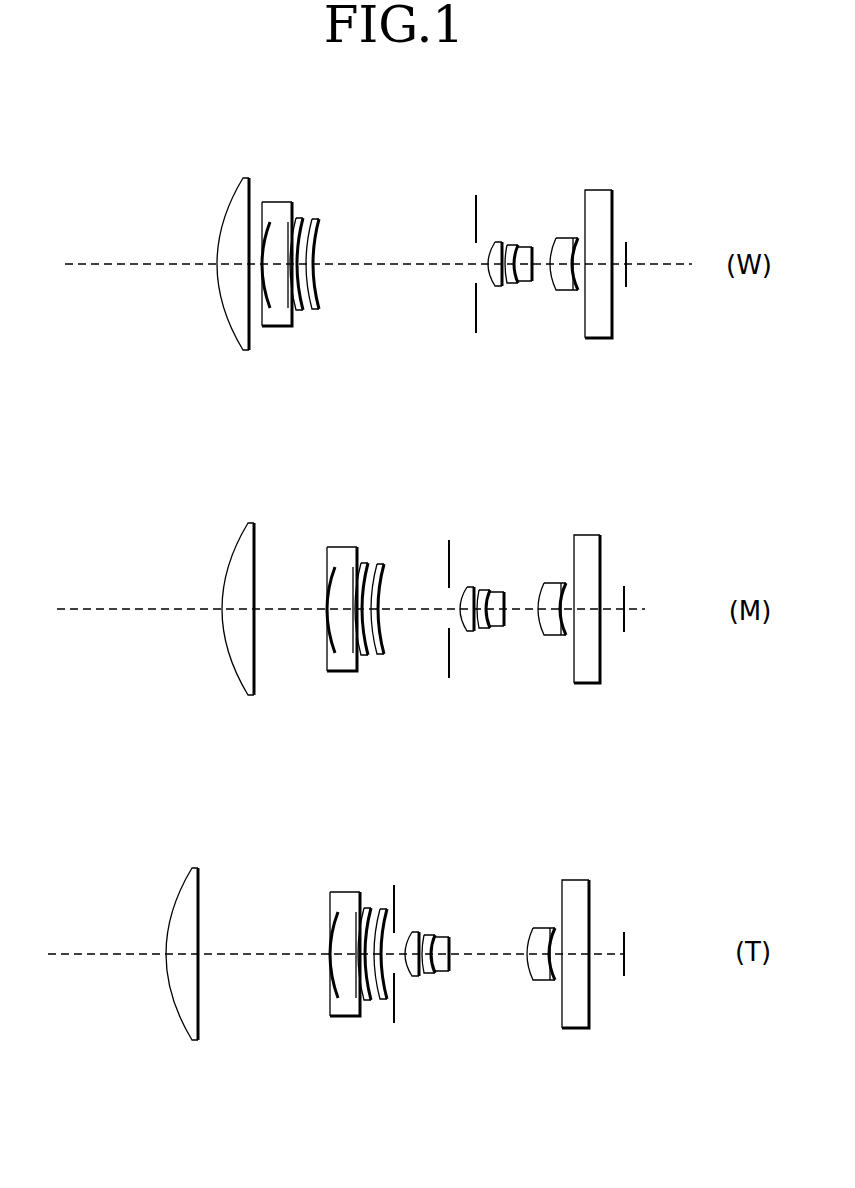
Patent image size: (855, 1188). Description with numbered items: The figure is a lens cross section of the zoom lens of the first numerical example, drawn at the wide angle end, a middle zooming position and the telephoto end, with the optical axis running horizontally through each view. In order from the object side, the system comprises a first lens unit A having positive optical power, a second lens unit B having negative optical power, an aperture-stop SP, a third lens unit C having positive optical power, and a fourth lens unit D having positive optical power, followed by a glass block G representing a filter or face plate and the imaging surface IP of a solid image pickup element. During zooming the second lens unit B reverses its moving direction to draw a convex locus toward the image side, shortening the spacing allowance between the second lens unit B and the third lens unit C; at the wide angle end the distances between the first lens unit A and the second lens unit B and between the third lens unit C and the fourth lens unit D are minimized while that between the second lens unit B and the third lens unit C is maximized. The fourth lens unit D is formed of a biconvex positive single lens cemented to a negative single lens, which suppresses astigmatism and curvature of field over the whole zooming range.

The first lens unit A is at (222, 368).
The second lens unit B is at (264, 368).
The third lens unit C is at (535, 369).
The fourth lens unit D is at (550, 369).
The aperture-stop SP is at (476, 196).
The glass block G is at (593, 191).
The imaging surface IP is at (626, 243).